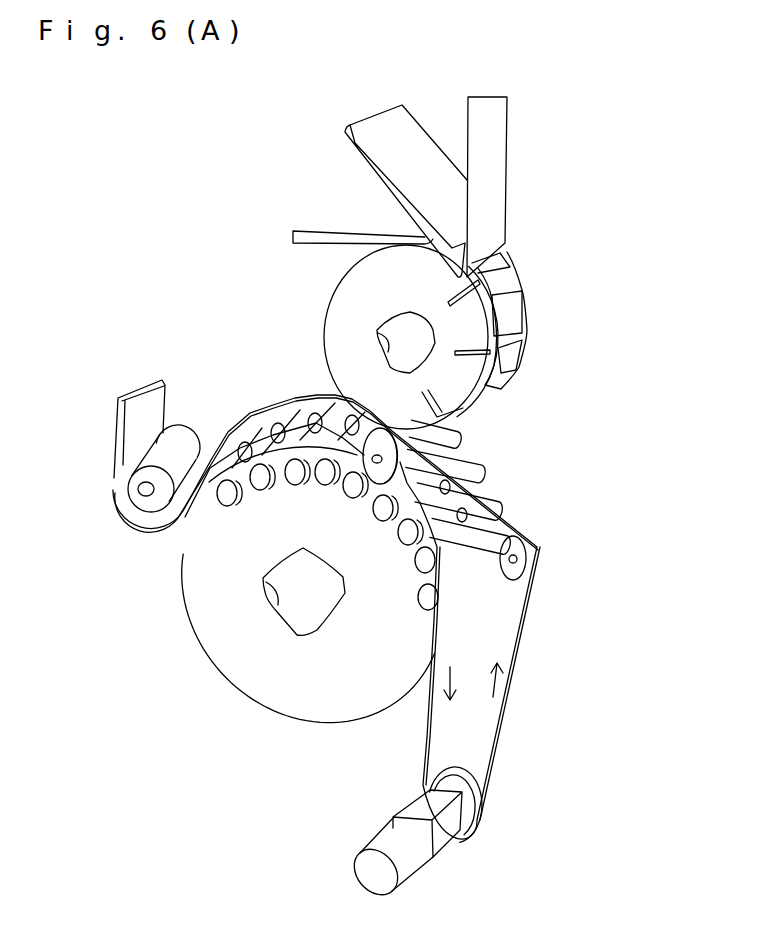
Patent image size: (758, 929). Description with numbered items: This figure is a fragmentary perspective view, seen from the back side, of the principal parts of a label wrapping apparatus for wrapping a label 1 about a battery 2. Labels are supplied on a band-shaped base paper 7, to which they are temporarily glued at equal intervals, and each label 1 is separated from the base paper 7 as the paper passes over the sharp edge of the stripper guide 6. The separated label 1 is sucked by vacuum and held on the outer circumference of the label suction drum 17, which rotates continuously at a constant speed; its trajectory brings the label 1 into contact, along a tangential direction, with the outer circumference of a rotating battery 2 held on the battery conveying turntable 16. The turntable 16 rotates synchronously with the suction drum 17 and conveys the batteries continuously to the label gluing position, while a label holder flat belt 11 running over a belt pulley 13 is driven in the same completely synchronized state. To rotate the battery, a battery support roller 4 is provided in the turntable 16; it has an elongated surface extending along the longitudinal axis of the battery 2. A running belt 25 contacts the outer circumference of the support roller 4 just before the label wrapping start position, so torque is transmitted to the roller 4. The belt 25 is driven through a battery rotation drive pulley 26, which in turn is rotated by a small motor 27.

The label 1 is at (510, 302).
The battery 2 is at (478, 465).
The battery support roller 4 is at (483, 525).
The stripper guide 6 is at (371, 144).
The base paper 7 is at (493, 155).
The label holder flat belt 11 is at (145, 402).
The belt pulley 13 is at (143, 507).
The battery conveying turntable 16 is at (260, 680).
The label suction drum 17 is at (335, 312).
The belt 25 is at (518, 630).
The battery rotation drive pulley 26 is at (473, 783).
The small motor 27 is at (408, 860).